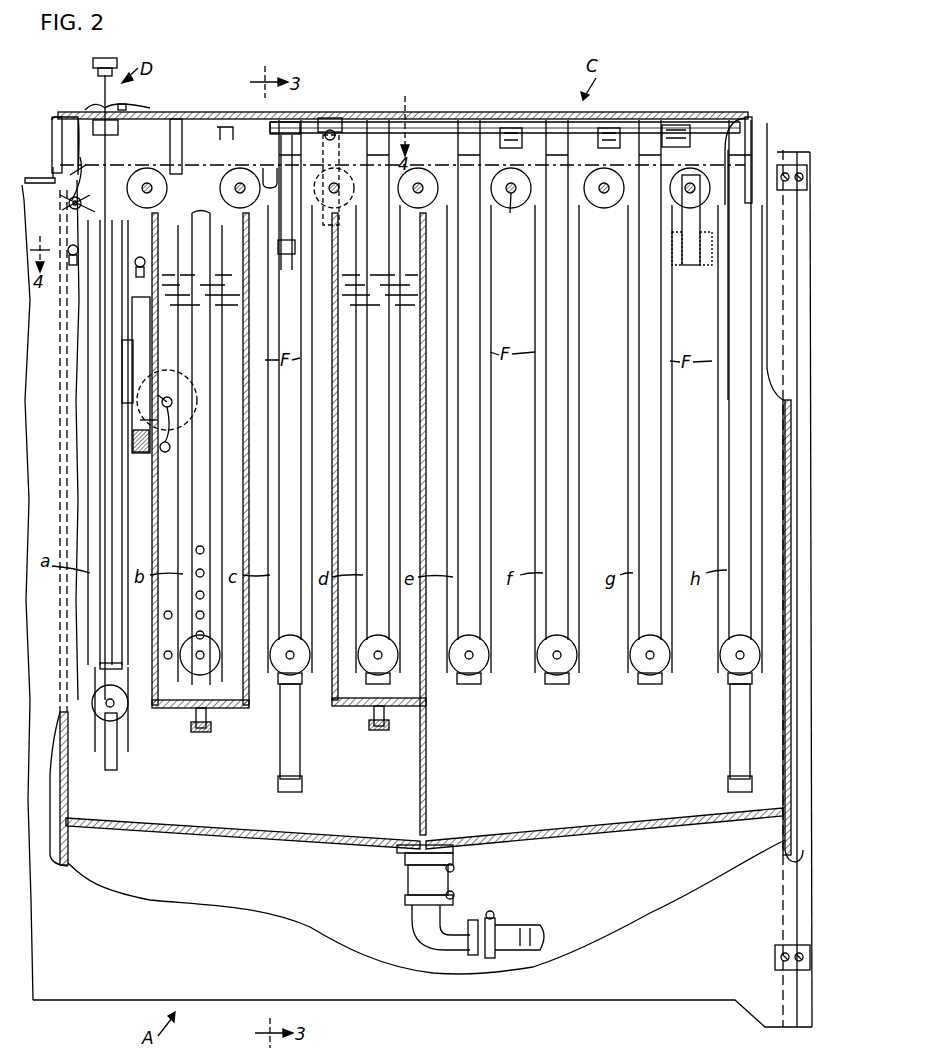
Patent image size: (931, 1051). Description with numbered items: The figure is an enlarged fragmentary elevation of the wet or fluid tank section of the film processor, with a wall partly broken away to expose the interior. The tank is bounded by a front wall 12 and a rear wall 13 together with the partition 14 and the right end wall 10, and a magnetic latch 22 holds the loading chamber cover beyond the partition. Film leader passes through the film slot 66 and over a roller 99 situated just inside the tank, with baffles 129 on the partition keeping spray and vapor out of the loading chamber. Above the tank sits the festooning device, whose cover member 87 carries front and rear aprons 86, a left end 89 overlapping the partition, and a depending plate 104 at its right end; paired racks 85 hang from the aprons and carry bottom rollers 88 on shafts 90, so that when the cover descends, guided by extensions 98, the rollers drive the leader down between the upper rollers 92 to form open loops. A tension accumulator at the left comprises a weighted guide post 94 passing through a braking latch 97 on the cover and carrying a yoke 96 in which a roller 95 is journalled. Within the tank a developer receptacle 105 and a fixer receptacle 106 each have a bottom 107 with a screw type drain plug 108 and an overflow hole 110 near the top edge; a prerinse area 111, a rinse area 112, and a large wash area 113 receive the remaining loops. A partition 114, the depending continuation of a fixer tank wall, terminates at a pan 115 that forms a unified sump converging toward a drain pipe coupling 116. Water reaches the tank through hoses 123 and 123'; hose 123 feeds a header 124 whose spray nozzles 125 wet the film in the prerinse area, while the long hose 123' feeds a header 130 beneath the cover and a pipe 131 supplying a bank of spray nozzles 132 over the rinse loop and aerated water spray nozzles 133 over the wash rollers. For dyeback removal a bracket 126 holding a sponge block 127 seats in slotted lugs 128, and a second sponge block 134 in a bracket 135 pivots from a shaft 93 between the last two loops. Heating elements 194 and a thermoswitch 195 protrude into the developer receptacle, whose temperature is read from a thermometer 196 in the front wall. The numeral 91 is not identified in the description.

The right end wall 10 is at (787, 732).
The front wall 12 is at (95, 995).
The rear wall 13 is at (240, 893).
The partition 14 is at (64, 790).
The magnetic latch 22 is at (50, 173).
The film slot 66 is at (37, 173).
The paired racks 85 is at (550, 303).
The aprons 86 is at (67, 118).
The cover member 87 is at (437, 113).
The bottom rollers 88 is at (397, 657).
The left end 89 is at (55, 118).
The shafts 90 is at (200, 657).
The perforated hanger 91 is at (203, 595).
The rollers 92 is at (523, 197).
The shaft 93 is at (427, 192).
The weighted guide post 94 is at (110, 483).
The roller 95 is at (125, 713).
The yoke 96 is at (123, 598).
The braking latch 97 is at (125, 105).
The extensions 98 is at (295, 780).
The roller 99 is at (69, 203).
The depending plate 104 is at (752, 158).
The developer receptacle 105 is at (183, 688).
The fixer receptacle 106 is at (340, 707).
The bottom 107 is at (233, 710).
The drain plug 108 is at (210, 730).
The overflow hole 110 is at (240, 175).
The prerinse area 111 is at (143, 520).
The rinse area 112 is at (267, 677).
The wash area 113 is at (602, 673).
The partition 114 is at (430, 745).
The pan 115 is at (343, 842).
The drain pipe coupling 116 is at (412, 885).
The rubber hose 123 is at (61, 442).
The rubber hose 123' is at (347, 149).
The header 124 is at (143, 183).
The spray nozzles 125 is at (143, 267).
The bracket 126 is at (137, 313).
The sponge block 127 is at (133, 442).
The slotted lugs 128 is at (125, 135).
The baffles 129 is at (78, 171).
The header 130 is at (330, 120).
The pipe 131 is at (487, 118).
The spray nozzles 132 is at (243, 167).
The aerated water spray nozzles 133 is at (503, 137).
The second sponge block 134 is at (670, 253).
The bracket 135 is at (690, 220).
The heating elements 194 is at (164, 655).
The thermoswitch 195 is at (157, 417).
The thermometer 196 is at (150, 397).